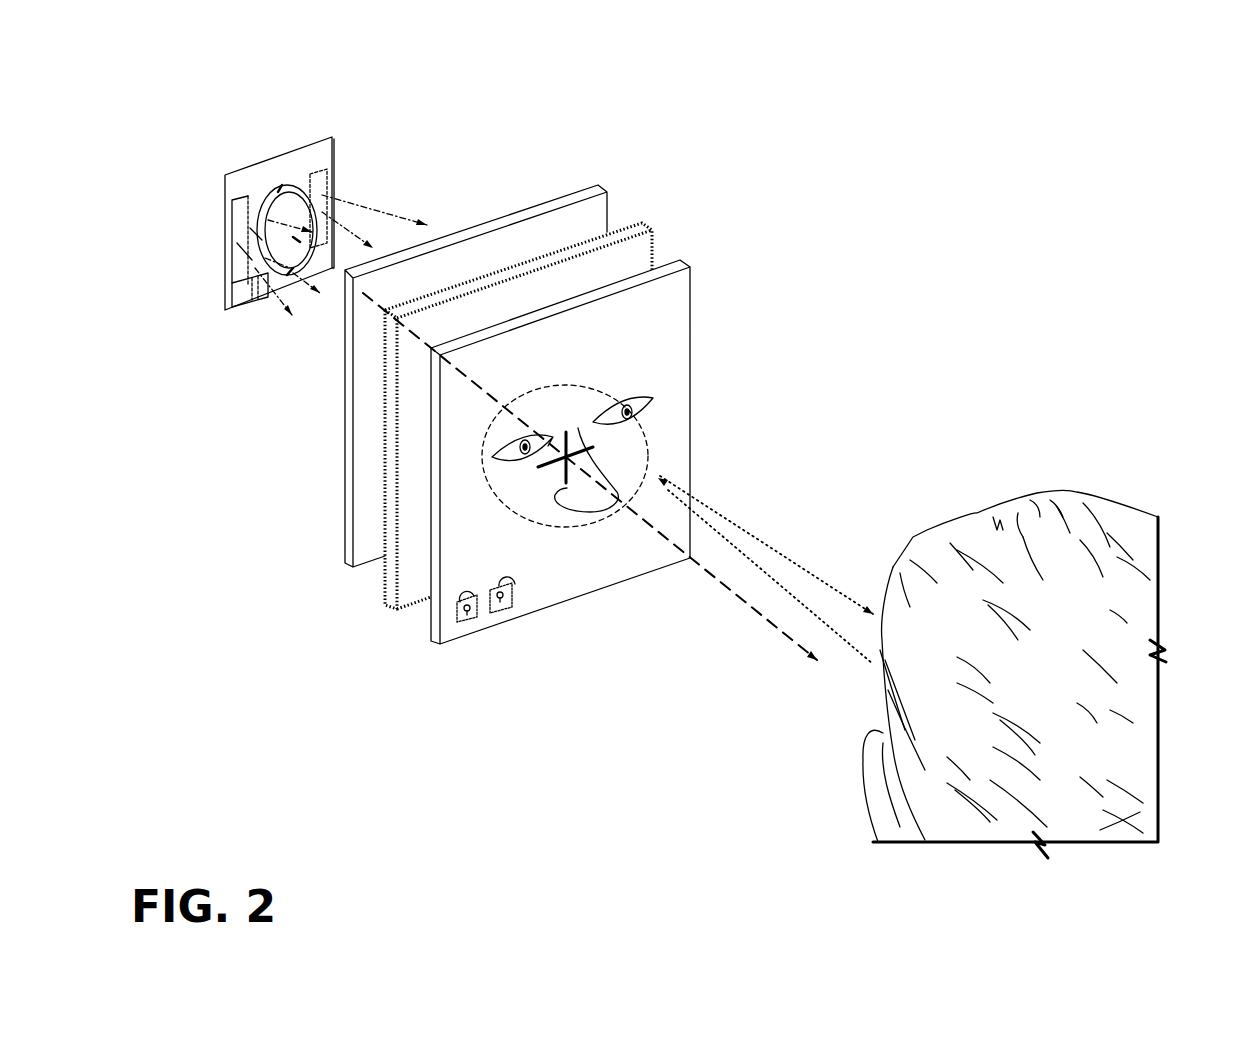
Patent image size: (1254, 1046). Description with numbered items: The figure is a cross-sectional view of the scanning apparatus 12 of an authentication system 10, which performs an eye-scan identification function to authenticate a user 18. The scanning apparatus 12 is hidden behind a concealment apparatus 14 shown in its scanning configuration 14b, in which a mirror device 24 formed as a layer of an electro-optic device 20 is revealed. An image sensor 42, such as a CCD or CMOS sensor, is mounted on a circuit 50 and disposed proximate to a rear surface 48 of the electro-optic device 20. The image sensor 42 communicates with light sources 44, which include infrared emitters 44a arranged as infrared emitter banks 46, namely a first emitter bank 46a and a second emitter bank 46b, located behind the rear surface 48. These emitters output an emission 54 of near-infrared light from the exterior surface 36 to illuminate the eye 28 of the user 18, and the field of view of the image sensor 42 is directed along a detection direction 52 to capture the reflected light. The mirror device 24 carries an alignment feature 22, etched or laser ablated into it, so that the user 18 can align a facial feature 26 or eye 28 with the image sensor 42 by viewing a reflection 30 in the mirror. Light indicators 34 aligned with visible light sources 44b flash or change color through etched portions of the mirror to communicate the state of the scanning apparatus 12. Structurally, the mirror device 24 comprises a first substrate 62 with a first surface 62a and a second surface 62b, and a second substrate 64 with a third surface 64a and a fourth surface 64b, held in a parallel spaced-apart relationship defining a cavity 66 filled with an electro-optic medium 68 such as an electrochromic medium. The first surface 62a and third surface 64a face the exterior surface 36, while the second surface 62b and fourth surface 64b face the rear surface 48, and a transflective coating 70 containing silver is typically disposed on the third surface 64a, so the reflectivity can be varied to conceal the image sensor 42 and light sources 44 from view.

The authentication system 10 is at (553, 80).
The scanning apparatus 12 is at (235, 147).
The concealment apparatus 14 is at (595, 407).
The scanning configuration 14b is at (770, 233).
The user 18 is at (1187, 567).
The electro-optic device 20 is at (745, 171).
The cavity 66 is at (670, 208).
The alignment feature 22 is at (645, 330).
The mirror device 24 is at (368, 605).
The facial feature 26 is at (765, 635).
The eye 28 is at (860, 702).
The reflection 30 is at (665, 443).
The light indicators 34 is at (500, 615).
The exterior surface 36 is at (667, 378).
The image sensor 42 is at (287, 205).
The light sources 44 is at (181, 346).
The infrared emitters 44a is at (237, 267).
The visible light sources 44b is at (250, 287).
The infrared emitter banks 46 is at (274, 199).
The first emitter bank 46a is at (237, 220).
The second emitter bank 46b is at (322, 185).
The rear surface 48 is at (470, 217).
The circuit 50 is at (278, 172).
The detection direction 52 is at (735, 593).
The emission 54 is at (352, 230).
The first substrate 62 is at (670, 273).
The first surface 62a is at (448, 625).
The second surface 62b is at (427, 610).
The second substrate 64 is at (347, 460).
The third surface 64a is at (365, 552).
The fourth surface 64b is at (347, 532).
The electro-optic medium 68 is at (653, 243).
The transflective coating 70 is at (573, 188).